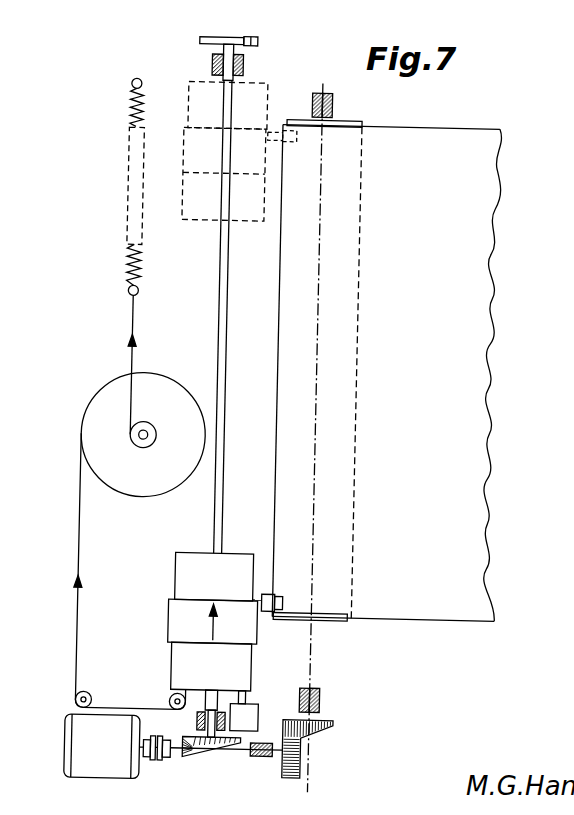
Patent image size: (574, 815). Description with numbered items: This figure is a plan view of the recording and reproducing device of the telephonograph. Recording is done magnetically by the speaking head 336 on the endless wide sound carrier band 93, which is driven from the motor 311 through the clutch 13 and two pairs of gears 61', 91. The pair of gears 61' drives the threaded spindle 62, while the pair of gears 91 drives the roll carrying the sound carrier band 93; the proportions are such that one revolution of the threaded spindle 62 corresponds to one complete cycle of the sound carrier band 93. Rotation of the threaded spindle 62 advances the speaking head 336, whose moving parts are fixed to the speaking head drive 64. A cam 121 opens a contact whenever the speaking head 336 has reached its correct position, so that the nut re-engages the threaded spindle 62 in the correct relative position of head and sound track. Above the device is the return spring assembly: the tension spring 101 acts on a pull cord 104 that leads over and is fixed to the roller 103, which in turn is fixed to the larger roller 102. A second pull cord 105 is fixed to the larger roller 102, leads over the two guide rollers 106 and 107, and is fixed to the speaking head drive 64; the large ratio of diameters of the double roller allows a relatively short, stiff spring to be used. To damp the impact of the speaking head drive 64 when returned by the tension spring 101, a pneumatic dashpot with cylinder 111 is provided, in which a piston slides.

The cam 121 is at (221, 41).
The threaded spindle 62 is at (221, 384).
The sound carrier band 93 is at (483, 170).
The tension spring 101 is at (123, 269).
The pull cord 104 is at (131, 325).
The larger roller 102 is at (116, 397).
The roller 103 is at (152, 431).
The second pull cord 105 is at (81, 535).
The guide roller 106 is at (93, 699).
The guide roller 107 is at (178, 702).
The speaking head drive 64 is at (183, 627).
The speaking head 336 is at (280, 597).
The cylinder 111 is at (259, 714).
The motor 311 is at (111, 772).
The clutch 13 is at (165, 763).
The pair of gears 61' is at (226, 760).
The pair of gears 91 is at (312, 737).